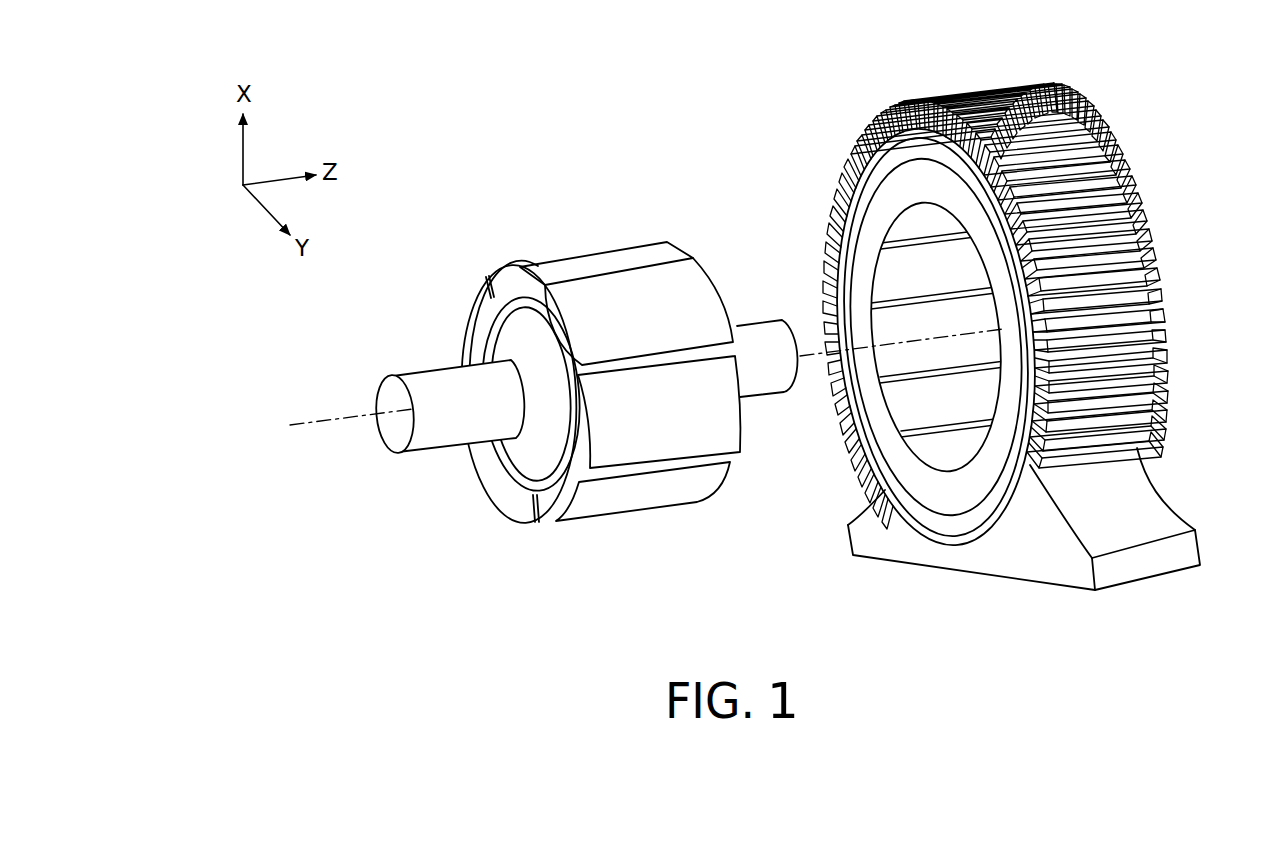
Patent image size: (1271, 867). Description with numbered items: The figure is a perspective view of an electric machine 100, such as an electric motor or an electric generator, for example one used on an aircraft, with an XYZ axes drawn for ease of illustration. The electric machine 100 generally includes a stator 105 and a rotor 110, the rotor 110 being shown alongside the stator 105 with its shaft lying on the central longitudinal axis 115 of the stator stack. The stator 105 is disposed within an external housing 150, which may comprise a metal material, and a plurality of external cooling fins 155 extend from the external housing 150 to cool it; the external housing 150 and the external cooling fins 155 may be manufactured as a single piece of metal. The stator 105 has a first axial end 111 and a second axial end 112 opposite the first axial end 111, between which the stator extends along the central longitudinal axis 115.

The electric machine 100 is at (587, 51).
The stator 105 is at (843, 126).
The rotor 110 is at (605, 255).
The first axial end 111 is at (869, 198).
The second axial end 112 is at (1126, 131).
The central longitudinal axis 115 is at (298, 428).
The external housing 150 is at (1040, 560).
The external cooling fins 155 is at (1126, 190).